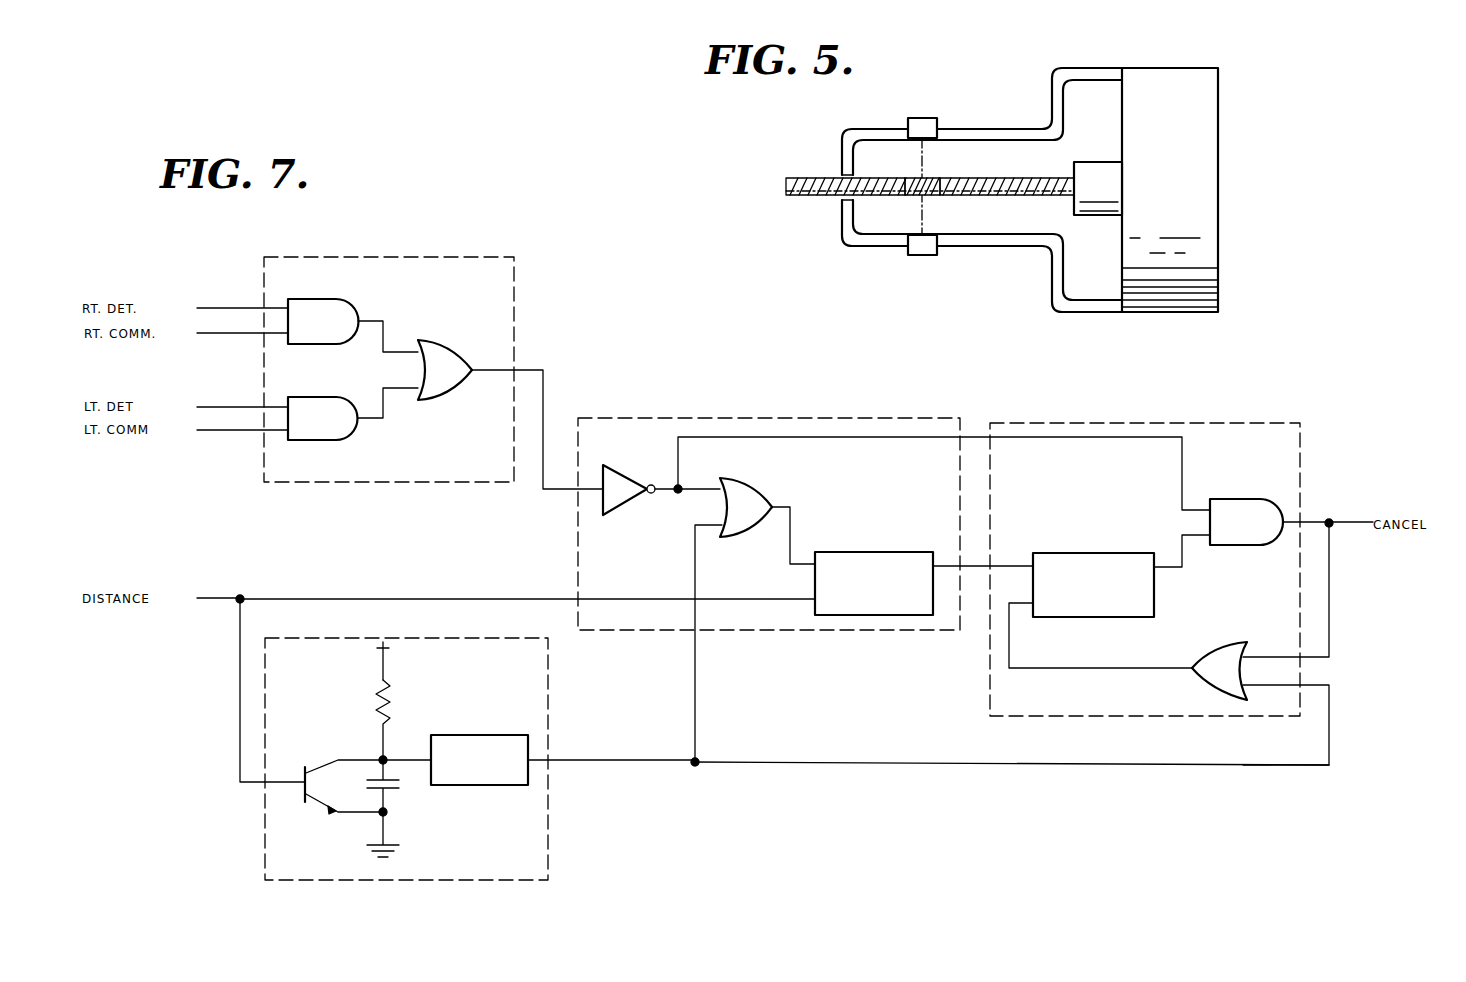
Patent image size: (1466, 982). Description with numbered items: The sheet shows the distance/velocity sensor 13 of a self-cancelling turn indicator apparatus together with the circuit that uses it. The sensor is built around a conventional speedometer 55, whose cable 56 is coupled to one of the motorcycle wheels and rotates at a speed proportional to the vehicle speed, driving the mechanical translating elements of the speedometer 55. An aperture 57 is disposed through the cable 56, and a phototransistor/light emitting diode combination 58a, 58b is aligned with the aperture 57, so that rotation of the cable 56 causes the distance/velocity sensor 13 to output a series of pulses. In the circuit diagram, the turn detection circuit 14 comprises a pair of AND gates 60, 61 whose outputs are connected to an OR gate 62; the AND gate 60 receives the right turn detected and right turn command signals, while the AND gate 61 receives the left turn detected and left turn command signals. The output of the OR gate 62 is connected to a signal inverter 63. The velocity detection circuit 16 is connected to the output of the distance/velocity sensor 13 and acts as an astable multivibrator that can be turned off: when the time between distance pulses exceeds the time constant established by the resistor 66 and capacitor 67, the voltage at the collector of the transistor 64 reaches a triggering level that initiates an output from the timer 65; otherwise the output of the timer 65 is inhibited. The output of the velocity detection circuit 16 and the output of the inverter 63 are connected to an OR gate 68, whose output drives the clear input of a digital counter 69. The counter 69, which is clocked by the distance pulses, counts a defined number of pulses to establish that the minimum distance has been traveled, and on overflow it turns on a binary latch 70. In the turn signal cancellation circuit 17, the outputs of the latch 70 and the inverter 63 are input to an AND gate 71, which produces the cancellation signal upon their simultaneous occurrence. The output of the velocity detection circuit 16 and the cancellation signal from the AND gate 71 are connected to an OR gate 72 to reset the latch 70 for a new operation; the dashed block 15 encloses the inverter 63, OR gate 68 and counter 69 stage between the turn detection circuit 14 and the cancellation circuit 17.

In FIG. 5, the distance/velocity sensor 13 is at (950, 108).
In FIG. 5, the speedometer 55 is at (1222, 112).
In FIG. 5, the cable 56 is at (808, 178).
In FIG. 5, the aperture 57 is at (922, 182).
In FIG. 5, the phototransistor/light emitting diode combination 58a is at (912, 118).
In FIG. 5, the phototransistor/light emitting diode combination 58b is at (912, 256).
In FIG. 7, the turn detection circuit 14 is at (514, 285).
In FIG. 7, the counter logic block 15 is at (578, 538).
In FIG. 7, the velocity detection circuit 16 is at (548, 846).
In FIG. 7, the turn signal cancellation circuit 17 is at (988, 705).
In FIG. 7, the AND gate 60 is at (354, 312).
In FIG. 7, the AND gate 61 is at (348, 440).
In FIG. 7, the OR gate 62 is at (436, 347).
In FIG. 7, the signal inverter 63 is at (624, 505).
In FIG. 7, the transistor 64 is at (330, 762).
In FIG. 7, the timing circuit 65 is at (468, 735).
In FIG. 7, the resistor 66 is at (390, 692).
In FIG. 7, the capacitor 67 is at (396, 790).
In FIG. 7, the OR gate 68 is at (766, 492).
In FIG. 7, the digital counter 69 is at (880, 552).
In FIG. 7, the binary latch 70 is at (1085, 553).
In FIG. 7, the AND gate 71 is at (1258, 499).
In FIG. 7, the OR gate 72 is at (1213, 642).